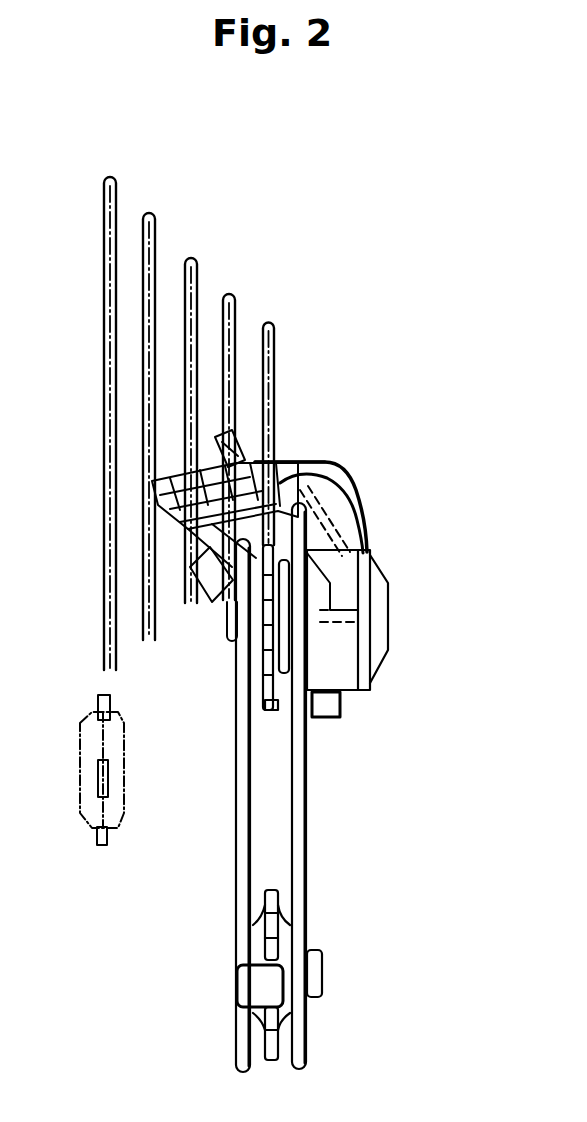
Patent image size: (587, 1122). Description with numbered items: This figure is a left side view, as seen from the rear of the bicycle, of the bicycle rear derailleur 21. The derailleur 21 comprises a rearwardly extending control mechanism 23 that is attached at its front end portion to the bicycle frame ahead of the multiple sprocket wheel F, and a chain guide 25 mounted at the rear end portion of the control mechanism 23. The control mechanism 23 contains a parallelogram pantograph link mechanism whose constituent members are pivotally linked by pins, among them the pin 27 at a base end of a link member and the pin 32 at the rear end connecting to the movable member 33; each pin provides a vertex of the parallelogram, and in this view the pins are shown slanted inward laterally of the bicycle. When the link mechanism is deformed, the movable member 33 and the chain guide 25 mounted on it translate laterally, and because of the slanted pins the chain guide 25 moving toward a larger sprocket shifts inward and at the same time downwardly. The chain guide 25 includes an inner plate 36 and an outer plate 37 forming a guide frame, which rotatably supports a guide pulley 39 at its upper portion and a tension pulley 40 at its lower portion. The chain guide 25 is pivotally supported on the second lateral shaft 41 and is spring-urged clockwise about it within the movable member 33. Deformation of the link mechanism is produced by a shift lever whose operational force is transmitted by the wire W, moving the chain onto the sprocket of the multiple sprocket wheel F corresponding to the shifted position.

The multiple sprocket wheel F is at (197, 247).
The wire W is at (210, 455).
The bicycle rear derailleur 21 is at (355, 465).
The control mechanism 23 is at (328, 460).
The chain guide 25 is at (310, 743).
The pin 27 is at (232, 533).
The pin 32 is at (360, 496).
The movable member 33 is at (342, 525).
The inner plate 36 is at (236, 824).
The outer plate 37 is at (310, 787).
The guide pulley 39 is at (263, 652).
The tension pulley 40 is at (273, 923).
The second lateral shaft 41 is at (347, 607).